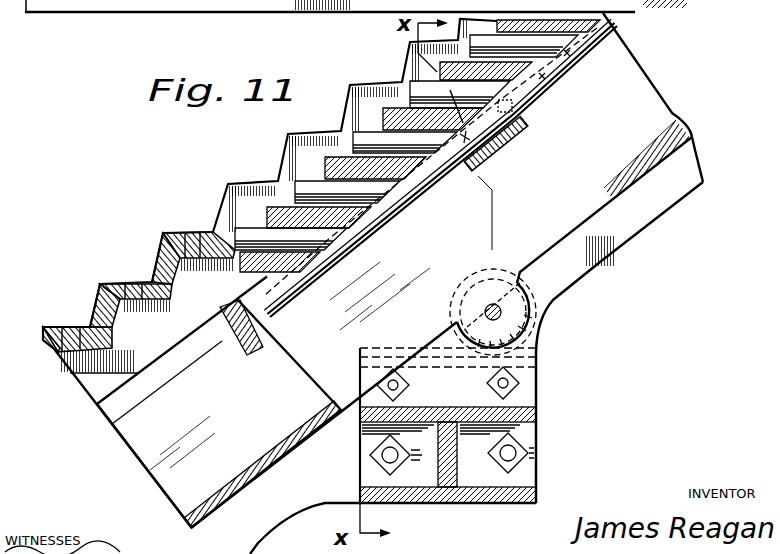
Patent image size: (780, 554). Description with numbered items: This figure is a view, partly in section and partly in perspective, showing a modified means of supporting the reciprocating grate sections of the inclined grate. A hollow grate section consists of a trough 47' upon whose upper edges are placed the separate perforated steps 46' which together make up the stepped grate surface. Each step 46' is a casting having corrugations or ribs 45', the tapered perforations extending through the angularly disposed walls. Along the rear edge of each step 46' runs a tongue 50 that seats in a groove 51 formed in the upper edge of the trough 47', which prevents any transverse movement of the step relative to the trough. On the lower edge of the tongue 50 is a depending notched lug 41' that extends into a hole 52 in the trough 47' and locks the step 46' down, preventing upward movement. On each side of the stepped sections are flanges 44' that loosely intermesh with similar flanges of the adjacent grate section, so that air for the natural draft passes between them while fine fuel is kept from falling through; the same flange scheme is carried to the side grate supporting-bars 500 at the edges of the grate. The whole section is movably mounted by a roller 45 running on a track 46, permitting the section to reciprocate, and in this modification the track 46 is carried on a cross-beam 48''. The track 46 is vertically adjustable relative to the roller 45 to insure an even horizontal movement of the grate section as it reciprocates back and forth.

The side grate supporting-bar 500 is at (650, 215).
The tongue 50 is at (581, 62).
The groove 51 is at (560, 88).
The hole 52 is at (463, 150).
The notched lug 41' is at (518, 144).
The corrugation 45' is at (318, 186).
The flange 44' is at (376, 142).
The step 46' is at (256, 226).
The trough 47' is at (219, 402).
The roller 45 is at (538, 312).
The track 46 is at (535, 328).
The cross-beam 48'' is at (492, 425).